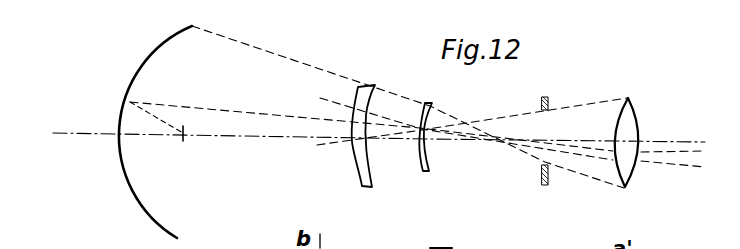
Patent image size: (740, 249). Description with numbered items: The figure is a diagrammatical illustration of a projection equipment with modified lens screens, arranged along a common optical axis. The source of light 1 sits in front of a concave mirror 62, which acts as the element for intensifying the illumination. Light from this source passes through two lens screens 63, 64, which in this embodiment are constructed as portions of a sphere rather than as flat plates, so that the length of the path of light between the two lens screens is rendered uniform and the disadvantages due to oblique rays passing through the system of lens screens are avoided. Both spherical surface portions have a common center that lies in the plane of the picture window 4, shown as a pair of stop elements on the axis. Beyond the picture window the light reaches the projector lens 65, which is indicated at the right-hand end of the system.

The concave mirror 62 is at (141, 200).
The source of light 1 is at (183, 145).
The lens screen 63 is at (358, 186).
The lens screen 64 is at (425, 172).
The plane of the picture window 4 is at (542, 182).
The projector lens 65 is at (620, 186).